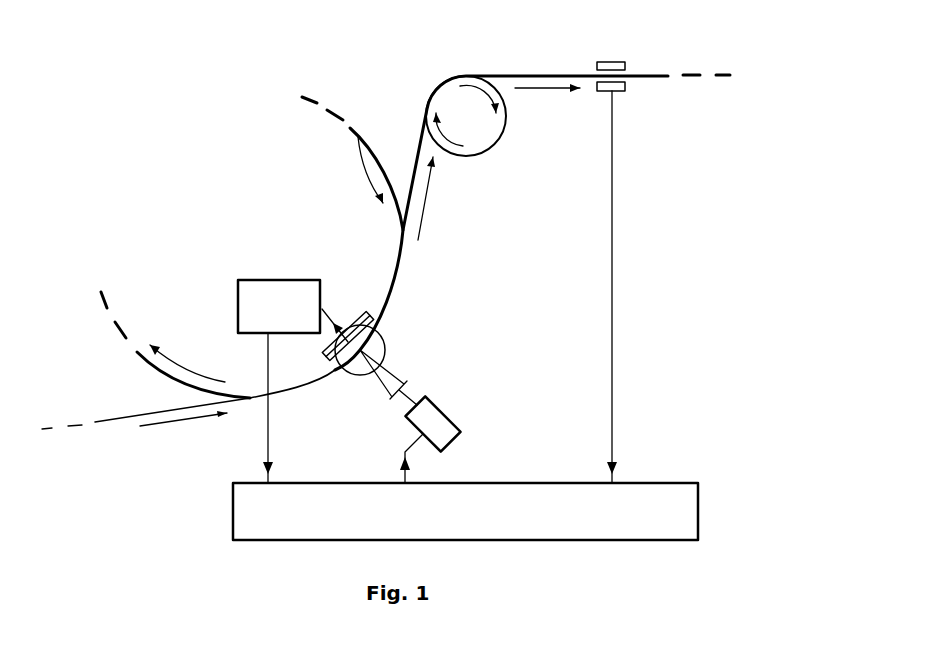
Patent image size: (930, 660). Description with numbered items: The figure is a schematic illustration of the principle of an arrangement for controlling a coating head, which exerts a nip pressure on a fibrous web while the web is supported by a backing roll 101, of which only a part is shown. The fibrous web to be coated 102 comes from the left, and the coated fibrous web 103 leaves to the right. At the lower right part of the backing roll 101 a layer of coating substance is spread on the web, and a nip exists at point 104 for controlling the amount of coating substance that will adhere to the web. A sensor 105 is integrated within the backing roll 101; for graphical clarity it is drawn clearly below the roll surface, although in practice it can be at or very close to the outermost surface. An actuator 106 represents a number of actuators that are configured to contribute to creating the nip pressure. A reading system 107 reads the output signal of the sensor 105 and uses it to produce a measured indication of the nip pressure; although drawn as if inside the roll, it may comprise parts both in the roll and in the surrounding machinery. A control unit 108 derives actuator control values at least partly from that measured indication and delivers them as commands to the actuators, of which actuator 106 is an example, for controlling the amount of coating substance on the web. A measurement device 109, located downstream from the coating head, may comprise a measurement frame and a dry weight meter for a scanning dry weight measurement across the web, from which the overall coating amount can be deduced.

The backing roll 101 is at (375, 148).
The fibrous web to be coated 102 is at (108, 418).
The coated fibrous web 103 is at (528, 75).
The nip 104 is at (385, 345).
The sensor 105 is at (368, 315).
The actuator 106 is at (450, 420).
The reading system 107 is at (248, 280).
The control unit 108 is at (233, 532).
The measurement device 109 is at (626, 88).